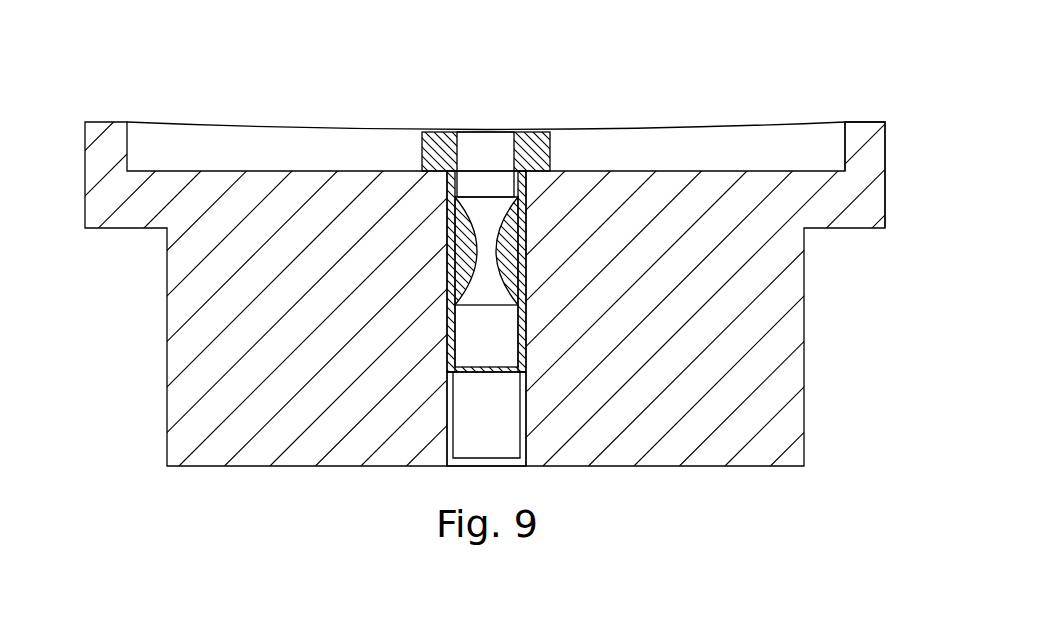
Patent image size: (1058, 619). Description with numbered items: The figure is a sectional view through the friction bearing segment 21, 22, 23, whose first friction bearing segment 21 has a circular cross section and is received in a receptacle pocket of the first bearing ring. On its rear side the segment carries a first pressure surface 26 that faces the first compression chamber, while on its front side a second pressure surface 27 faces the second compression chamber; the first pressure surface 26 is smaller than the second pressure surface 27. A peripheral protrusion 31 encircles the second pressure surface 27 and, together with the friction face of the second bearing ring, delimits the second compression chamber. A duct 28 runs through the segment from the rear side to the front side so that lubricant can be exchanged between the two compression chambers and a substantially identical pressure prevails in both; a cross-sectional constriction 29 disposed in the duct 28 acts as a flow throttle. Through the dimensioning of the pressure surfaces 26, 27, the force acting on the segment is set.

The first friction bearing segment 21 is at (529, 278).
The friction bearing segment 22 is at (529, 278).
The friction bearing segment 23 is at (529, 278).
The first pressure surface 26 is at (645, 480).
The second pressure surface 27 is at (258, 171).
The duct 28 is at (485, 438).
The cross-sectional constriction 29 is at (453, 263).
The peripheral protrusion 31 is at (857, 132).